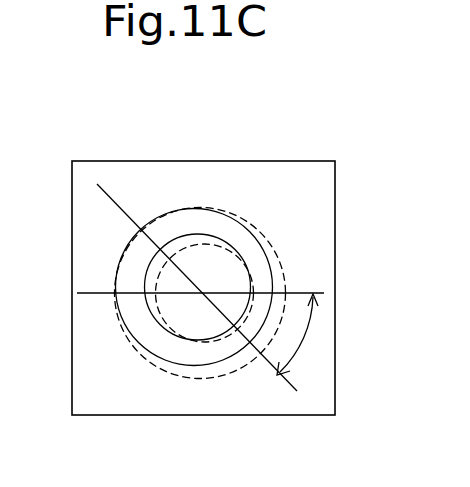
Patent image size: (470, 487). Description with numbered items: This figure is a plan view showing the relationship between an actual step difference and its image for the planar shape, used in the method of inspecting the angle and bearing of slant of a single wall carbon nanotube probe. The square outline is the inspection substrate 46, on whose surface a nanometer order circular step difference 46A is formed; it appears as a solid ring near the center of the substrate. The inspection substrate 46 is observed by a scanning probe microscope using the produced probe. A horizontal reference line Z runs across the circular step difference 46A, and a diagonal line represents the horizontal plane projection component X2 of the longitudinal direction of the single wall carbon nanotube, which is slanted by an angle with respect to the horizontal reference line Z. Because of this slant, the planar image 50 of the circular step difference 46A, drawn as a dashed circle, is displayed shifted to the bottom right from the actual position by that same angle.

The inspection substrate 46 is at (82, 143).
The circular step difference 46A is at (202, 220).
The planar image 50 is at (285, 282).
The horizontal plane projection component X2 is at (107, 195).
The horizontal reference line Z is at (95, 293).